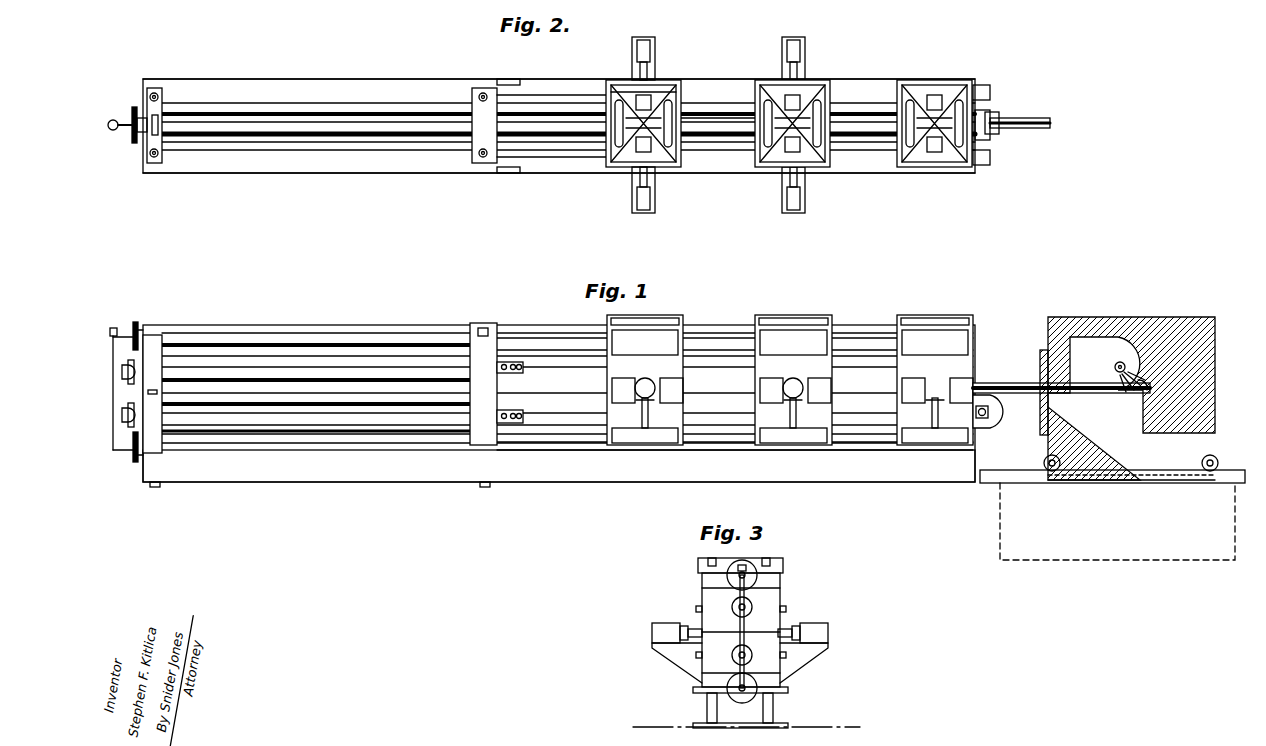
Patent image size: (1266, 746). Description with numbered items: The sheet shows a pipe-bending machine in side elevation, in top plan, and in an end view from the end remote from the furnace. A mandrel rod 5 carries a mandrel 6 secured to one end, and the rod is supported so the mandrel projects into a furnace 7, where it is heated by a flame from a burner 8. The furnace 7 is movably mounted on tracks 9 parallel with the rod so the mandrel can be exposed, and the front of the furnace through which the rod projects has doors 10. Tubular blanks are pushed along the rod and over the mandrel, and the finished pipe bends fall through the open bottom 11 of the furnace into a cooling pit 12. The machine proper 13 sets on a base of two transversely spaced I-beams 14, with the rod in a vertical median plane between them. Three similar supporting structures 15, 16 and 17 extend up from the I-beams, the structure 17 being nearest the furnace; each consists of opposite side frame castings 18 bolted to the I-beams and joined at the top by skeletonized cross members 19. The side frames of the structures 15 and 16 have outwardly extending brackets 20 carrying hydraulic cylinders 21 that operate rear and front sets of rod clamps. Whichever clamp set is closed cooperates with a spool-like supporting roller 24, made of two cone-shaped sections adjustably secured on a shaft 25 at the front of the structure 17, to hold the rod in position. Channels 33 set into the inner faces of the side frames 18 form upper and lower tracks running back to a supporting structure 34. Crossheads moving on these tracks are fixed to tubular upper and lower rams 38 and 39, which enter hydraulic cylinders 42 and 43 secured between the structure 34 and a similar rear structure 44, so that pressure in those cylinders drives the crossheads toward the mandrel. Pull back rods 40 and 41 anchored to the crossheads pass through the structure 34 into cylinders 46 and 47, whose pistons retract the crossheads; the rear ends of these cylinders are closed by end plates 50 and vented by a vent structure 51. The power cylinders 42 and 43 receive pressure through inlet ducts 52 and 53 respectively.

In FIG. 2, the mandrel rod 5 is at (1025, 115).
In FIG. 1, the mandrel rod 5 is at (1030, 398).
In FIG. 1, the mandrel 6 is at (1145, 375).
In FIG. 1, the furnace 7 is at (1160, 320).
In FIG. 1, the burner 8 is at (1122, 362).
In FIG. 1, the tracks 9 is at (1237, 470).
In FIG. 1, the doors 10 is at (1040, 368).
In FIG. 1, the open bottom 11 is at (1127, 445).
In FIG. 1, the cooling pit 12 is at (1122, 560).
In FIG. 2, the machine proper 13 is at (373, 42).
In FIG. 1, the machine proper 13 is at (400, 300).
In FIG. 2, the I-beams 14 is at (260, 79).
In FIG. 1, the I-beams 14 is at (445, 470).
In FIG. 3, the I-beams 14 is at (700, 713).
In FIG. 2, the supporting structure 15 is at (618, 167).
In FIG. 1, the supporting structure 15 is at (675, 318).
In FIG. 2, the supporting structure 16 is at (760, 173).
In FIG. 1, the supporting structure 16 is at (785, 316).
In FIG. 2, the supporting structure 17 is at (920, 166).
In FIG. 1, the supporting structure 17 is at (930, 315).
In FIG. 1, the side frame castings 18 is at (667, 417).
In FIG. 2, the skeletonized cross members 19 is at (690, 90).
In FIG. 3, the brackets 20 is at (675, 665).
In FIG. 2, the hydraulic cylinders 21 is at (642, 45).
In FIG. 3, the hydraulic cylinders 21 is at (655, 632).
In FIG. 2, the supporting roller 24 is at (992, 138).
In FIG. 1, the supporting roller 24 is at (991, 428).
In FIG. 2, the shaft 25 is at (985, 108).
In FIG. 1, the shaft 25 is at (995, 412).
In FIG. 2, the channels 33 is at (560, 92).
In FIG. 1, the channels 33 is at (735, 365).
In FIG. 2, the supporting structure 34 is at (478, 115).
In FIG. 1, the supporting structure 34 is at (480, 325).
In FIG. 2, the upper ram 38 is at (725, 133).
In FIG. 1, the upper ram 38 is at (585, 350).
In FIG. 1, the lower ram 39 is at (555, 430).
In FIG. 2, the pull back rod 40 is at (718, 125).
In FIG. 1, the pull back rod 40 is at (557, 332).
In FIG. 1, the pull back rod 41 is at (540, 440).
In FIG. 2, the hydraulic cylinder 42 is at (372, 113).
In FIG. 1, the hydraulic cylinder 42 is at (318, 365).
In FIG. 1, the hydraulic cylinder 43 is at (310, 420).
In FIG. 2, the supporting structure 44 is at (147, 88).
In FIG. 1, the supporting structure 44 is at (163, 348).
In FIG. 3, the supporting structure 44 is at (783, 592).
In FIG. 2, the cylinder 46 is at (308, 122).
In FIG. 1, the cylinder 46 is at (353, 328).
In FIG. 1, the cylinder 47 is at (247, 440).
In FIG. 2, the end plates 50 is at (132, 107).
In FIG. 1, the end plates 50 is at (135, 322).
In FIG. 3, the end plates 50 is at (735, 570).
In FIG. 2, the vent structure 51 is at (113, 130).
In FIG. 1, the vent structure 51 is at (112, 327).
In FIG. 3, the vent structure 51 is at (748, 580).
In FIG. 1, the inlet duct 52 is at (122, 374).
In FIG. 3, the inlet duct 52 is at (735, 612).
In FIG. 1, the inlet duct 53 is at (122, 415).
In FIG. 3, the inlet duct 53 is at (752, 657).